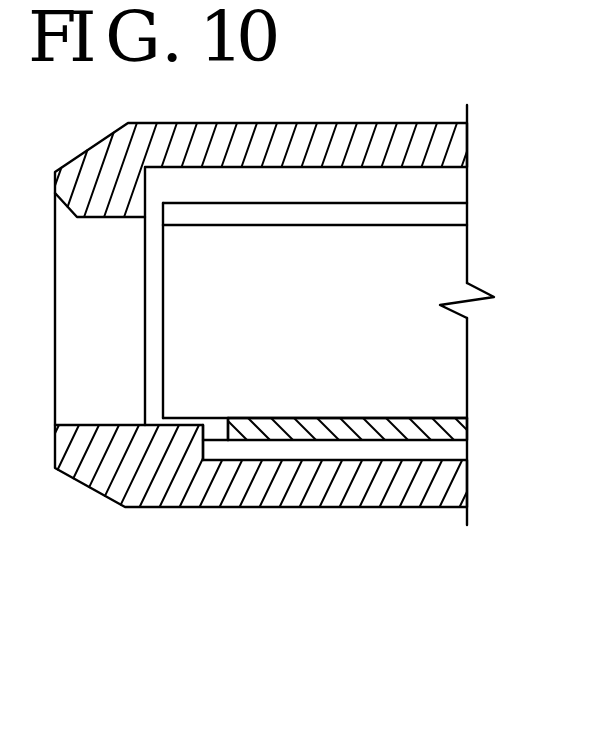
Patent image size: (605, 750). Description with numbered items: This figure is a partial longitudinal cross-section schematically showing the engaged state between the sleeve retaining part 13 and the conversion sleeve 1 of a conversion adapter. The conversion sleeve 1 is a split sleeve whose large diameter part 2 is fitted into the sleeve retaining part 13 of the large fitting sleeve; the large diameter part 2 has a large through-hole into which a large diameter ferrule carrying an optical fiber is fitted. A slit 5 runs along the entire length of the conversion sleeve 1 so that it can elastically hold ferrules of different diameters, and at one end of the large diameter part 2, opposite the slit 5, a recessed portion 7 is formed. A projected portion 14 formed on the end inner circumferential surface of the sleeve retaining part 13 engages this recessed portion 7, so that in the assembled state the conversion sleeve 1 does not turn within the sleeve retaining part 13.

The conversion sleeve 1 is at (453, 372).
The large diameter part 2 is at (413, 440).
The slit 5 is at (417, 208).
The recessed portion 7 is at (218, 430).
The sleeve retaining part 13 is at (300, 507).
The projected portion 14 is at (197, 430).